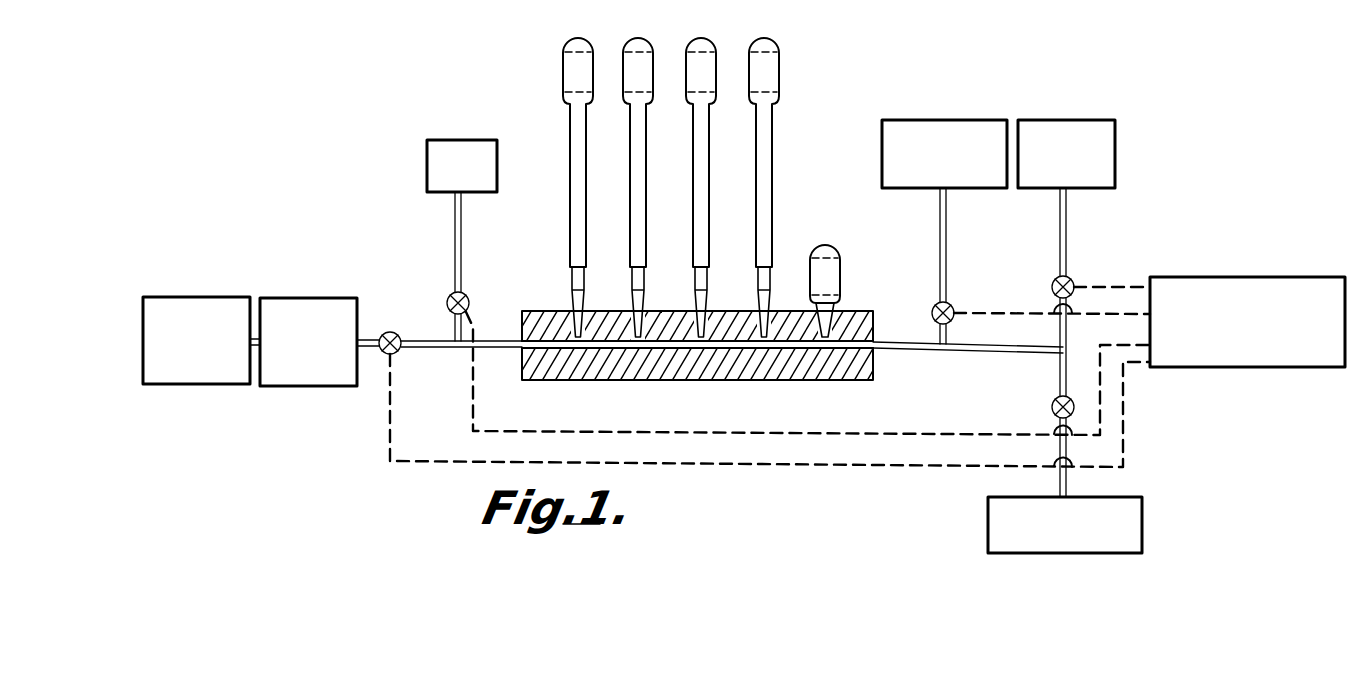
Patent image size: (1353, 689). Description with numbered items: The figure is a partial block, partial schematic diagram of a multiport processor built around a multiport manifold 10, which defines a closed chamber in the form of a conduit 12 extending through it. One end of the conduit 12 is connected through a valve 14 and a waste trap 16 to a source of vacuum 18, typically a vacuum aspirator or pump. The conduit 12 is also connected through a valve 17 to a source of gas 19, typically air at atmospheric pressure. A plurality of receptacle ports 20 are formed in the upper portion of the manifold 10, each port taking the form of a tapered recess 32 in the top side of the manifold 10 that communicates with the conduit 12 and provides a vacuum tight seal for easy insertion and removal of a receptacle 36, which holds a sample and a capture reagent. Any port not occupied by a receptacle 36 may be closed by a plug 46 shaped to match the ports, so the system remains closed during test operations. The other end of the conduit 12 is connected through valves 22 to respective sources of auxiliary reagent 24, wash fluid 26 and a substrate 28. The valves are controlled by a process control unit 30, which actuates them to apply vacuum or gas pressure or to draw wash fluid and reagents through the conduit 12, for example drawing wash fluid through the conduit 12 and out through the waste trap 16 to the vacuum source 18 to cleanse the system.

The multiport manifold 10 is at (702, 364).
The conduit 12 is at (733, 348).
The valve 14 is at (392, 336).
The waste trap 16 is at (333, 307).
The valve 17 is at (448, 298).
The source of vacuum 18 is at (203, 307).
The source of gas 19 is at (481, 148).
The receptacle ports 20 is at (845, 330).
The valves 22 is at (951, 306).
The source of auxiliary reagent 24 is at (960, 128).
The source of wash fluid 26 is at (580, 305).
The substrate 28 is at (1143, 514).
The process control unit 30 is at (1291, 288).
The tapered recess 32 is at (645, 305).
The receptacle 36 is at (766, 156).
The plug 46 is at (818, 265).